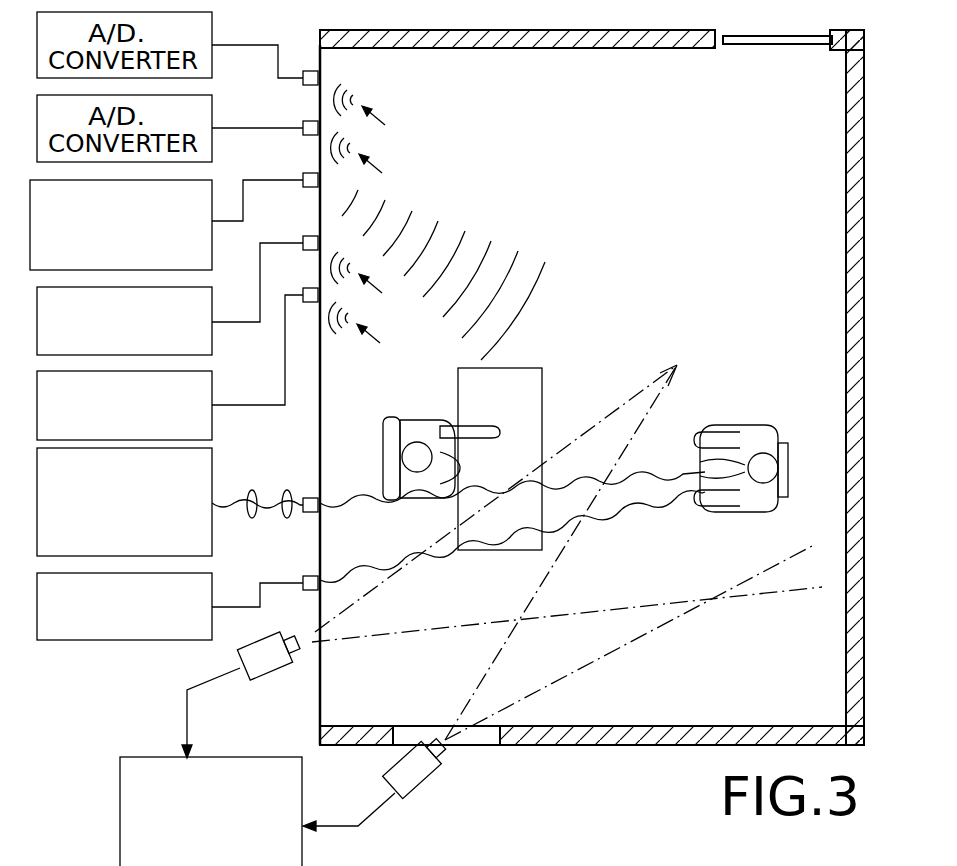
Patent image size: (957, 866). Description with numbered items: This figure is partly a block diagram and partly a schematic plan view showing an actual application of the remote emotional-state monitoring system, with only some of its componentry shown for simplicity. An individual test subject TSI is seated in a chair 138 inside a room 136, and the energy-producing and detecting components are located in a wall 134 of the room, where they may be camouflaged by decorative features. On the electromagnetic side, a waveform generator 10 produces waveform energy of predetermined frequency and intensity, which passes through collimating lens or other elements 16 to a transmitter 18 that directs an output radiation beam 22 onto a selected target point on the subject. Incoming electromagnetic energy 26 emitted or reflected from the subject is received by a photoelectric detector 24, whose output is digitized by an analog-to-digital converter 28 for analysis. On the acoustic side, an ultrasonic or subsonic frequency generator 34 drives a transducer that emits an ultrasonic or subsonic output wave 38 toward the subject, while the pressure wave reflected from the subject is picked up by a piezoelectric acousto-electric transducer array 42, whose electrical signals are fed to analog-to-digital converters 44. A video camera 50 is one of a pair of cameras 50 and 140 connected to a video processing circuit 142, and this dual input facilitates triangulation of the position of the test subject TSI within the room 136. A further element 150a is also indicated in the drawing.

The room 136 is at (443, 78).
The ultrasonic or subsonic frequency generator 34 is at (213, 237).
The ultrasonic or subsonic output wave 38 is at (313, 190).
The piezoelectric acousto-electric transducer array 42 is at (316, 250).
The analog-to-digital converters 44 is at (212, 336).
The waveform generator 10 is at (213, 470).
The collimating lens or other elements 16 is at (258, 532).
The transmitter 18 is at (312, 493).
The detector 24 is at (315, 570).
The output radiation beam 22 is at (365, 507).
The incoming electromagnetic energy 26 is at (390, 560).
The analog-to-digital converter 28 is at (137, 642).
The video camera 50 is at (287, 672).
The video processing circuit 142 is at (145, 755).
The camera 140 is at (420, 788).
The wall 134 is at (371, 690).
The sensor 150a is at (545, 858).
The individual test subject TSI is at (737, 420).
The chair 138 is at (787, 480).